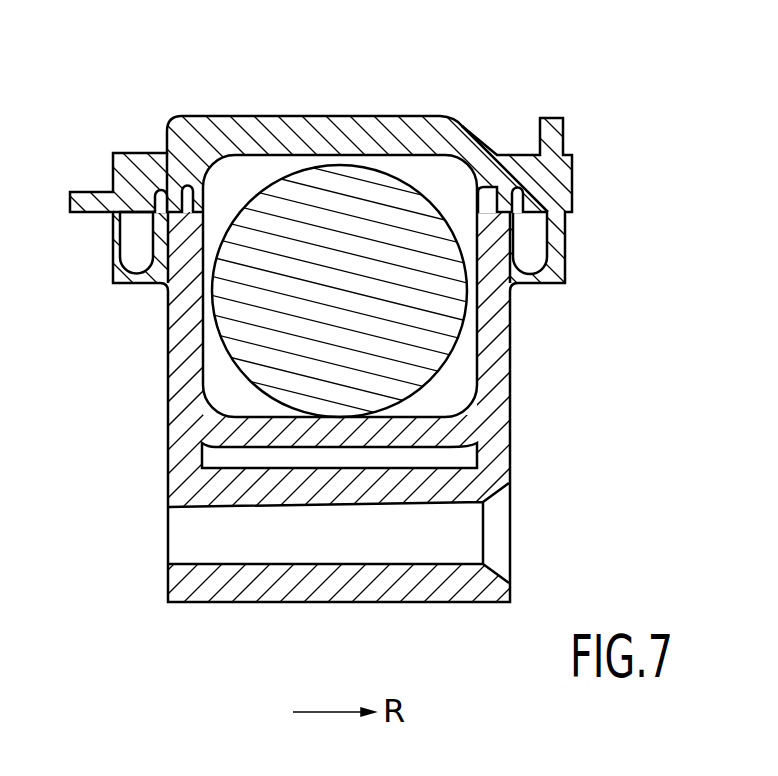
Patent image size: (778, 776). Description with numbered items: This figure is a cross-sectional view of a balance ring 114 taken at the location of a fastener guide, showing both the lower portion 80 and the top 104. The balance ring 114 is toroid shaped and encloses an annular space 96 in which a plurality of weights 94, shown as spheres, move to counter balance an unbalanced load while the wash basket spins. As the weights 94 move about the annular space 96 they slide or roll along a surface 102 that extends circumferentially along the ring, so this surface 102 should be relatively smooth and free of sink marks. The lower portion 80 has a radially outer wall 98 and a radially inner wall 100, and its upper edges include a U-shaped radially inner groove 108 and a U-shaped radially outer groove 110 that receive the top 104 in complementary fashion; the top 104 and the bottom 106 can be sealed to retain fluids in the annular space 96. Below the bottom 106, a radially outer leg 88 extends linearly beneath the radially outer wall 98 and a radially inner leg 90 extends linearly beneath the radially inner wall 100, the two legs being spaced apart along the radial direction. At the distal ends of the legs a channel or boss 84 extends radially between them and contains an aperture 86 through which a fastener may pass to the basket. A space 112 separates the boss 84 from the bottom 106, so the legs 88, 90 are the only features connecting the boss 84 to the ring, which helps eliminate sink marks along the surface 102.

The lower portion 80 is at (167, 593).
The boss 84 is at (310, 590).
The aperture 86 is at (455, 530).
The radially outer leg 88 is at (497, 463).
The radially inner leg 90 is at (183, 488).
The weights 94 is at (388, 200).
The annular space 96 is at (245, 196).
The radially outer wall 98 is at (177, 328).
The radially inner wall 100 is at (497, 327).
The surface 102 is at (431, 408).
The top 104 is at (300, 116).
The bottom 106 is at (230, 435).
The radially inner groove 108 is at (136, 258).
The radially outer groove 110 is at (542, 256).
The space 112 is at (201, 457).
The balance ring 114 is at (640, 243).